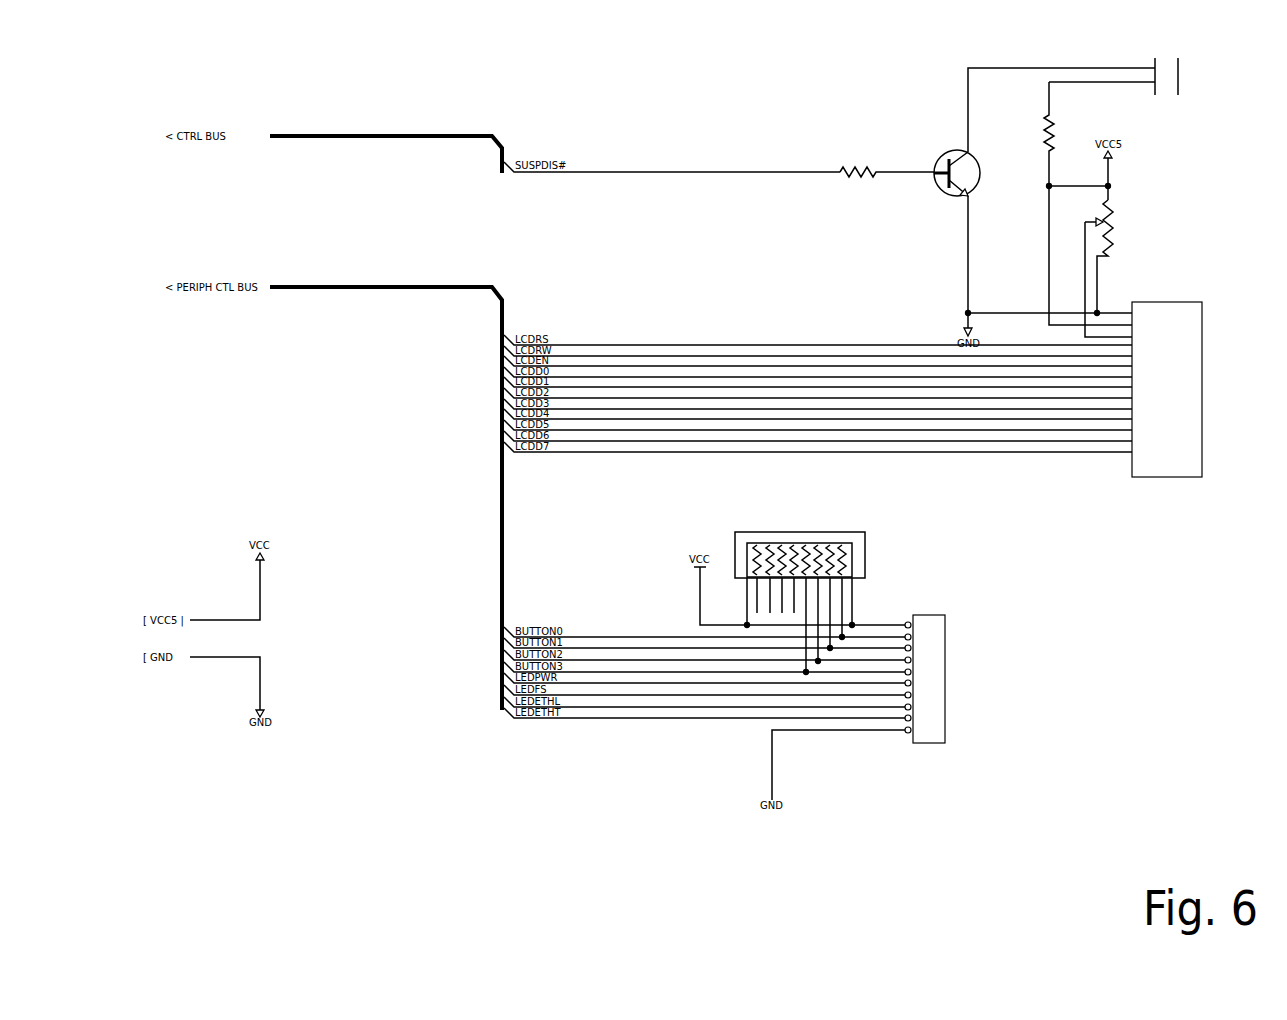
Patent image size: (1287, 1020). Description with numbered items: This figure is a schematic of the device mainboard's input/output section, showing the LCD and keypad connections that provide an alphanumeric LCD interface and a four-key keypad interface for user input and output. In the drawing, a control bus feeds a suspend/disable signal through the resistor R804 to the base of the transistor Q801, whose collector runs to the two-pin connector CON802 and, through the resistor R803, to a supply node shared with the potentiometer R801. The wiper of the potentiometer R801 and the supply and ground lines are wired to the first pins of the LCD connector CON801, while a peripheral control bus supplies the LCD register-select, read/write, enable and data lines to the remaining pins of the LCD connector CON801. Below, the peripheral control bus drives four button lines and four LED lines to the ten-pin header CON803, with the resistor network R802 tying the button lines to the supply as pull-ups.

The potentiometer 10K R801 is at (1112, 268).
The resistor network 47k R802 is at (800, 590).
The resistor 221 R803 is at (1088, 203).
The resistor 10K R804 is at (887, 170).
The NPN transistor Q801 is at (970, 173).
The LCD connector CON801 is at (1154, 388).
The 2-pin connector CON802 is at (1116, 85).
The 10 header connector CON803 is at (938, 678).